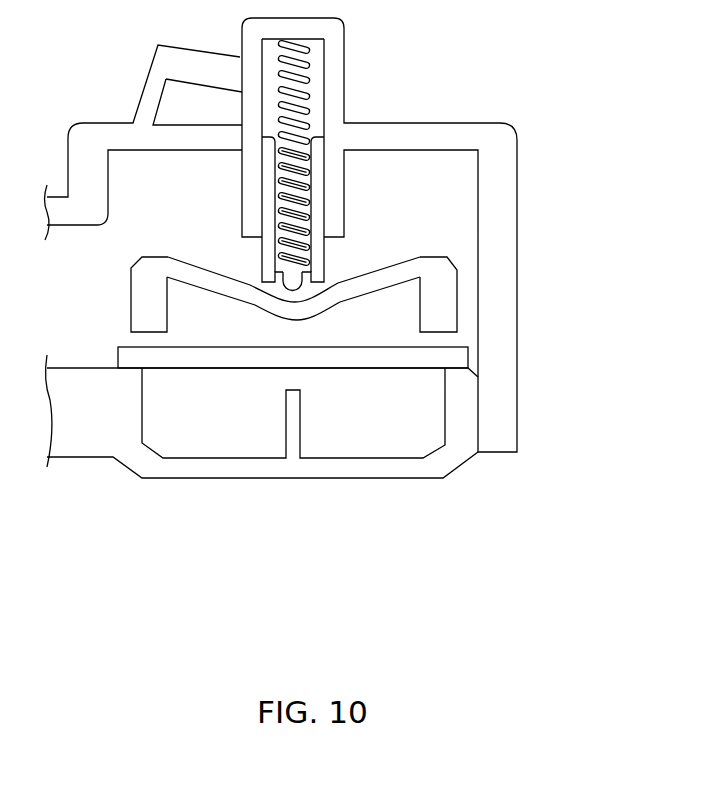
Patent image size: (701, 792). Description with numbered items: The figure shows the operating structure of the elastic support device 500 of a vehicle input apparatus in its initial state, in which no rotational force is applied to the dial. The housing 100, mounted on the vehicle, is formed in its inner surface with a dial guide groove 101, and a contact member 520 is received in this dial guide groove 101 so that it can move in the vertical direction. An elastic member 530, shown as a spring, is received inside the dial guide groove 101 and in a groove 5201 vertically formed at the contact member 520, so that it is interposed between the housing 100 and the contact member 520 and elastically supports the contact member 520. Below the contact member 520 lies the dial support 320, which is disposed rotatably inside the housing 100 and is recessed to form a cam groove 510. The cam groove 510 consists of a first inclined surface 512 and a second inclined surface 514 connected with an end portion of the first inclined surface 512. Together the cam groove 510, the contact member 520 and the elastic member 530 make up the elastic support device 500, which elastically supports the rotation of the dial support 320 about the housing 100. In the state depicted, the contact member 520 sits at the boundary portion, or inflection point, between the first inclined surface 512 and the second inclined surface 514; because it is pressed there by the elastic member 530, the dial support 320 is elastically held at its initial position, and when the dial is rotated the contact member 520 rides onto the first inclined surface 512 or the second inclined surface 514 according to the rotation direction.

The housing 100 is at (502, 223).
The dial guide groove 101 is at (318, 117).
The dial support 320 is at (442, 302).
The elastic support device 500 is at (517, 630).
The cam groove 510 is at (262, 438).
The first inclined surface 512 is at (242, 289).
The second inclined surface 514 is at (349, 297).
The contact member 520 is at (315, 180).
The groove 5201 is at (310, 255).
The elastic member 530 is at (310, 80).